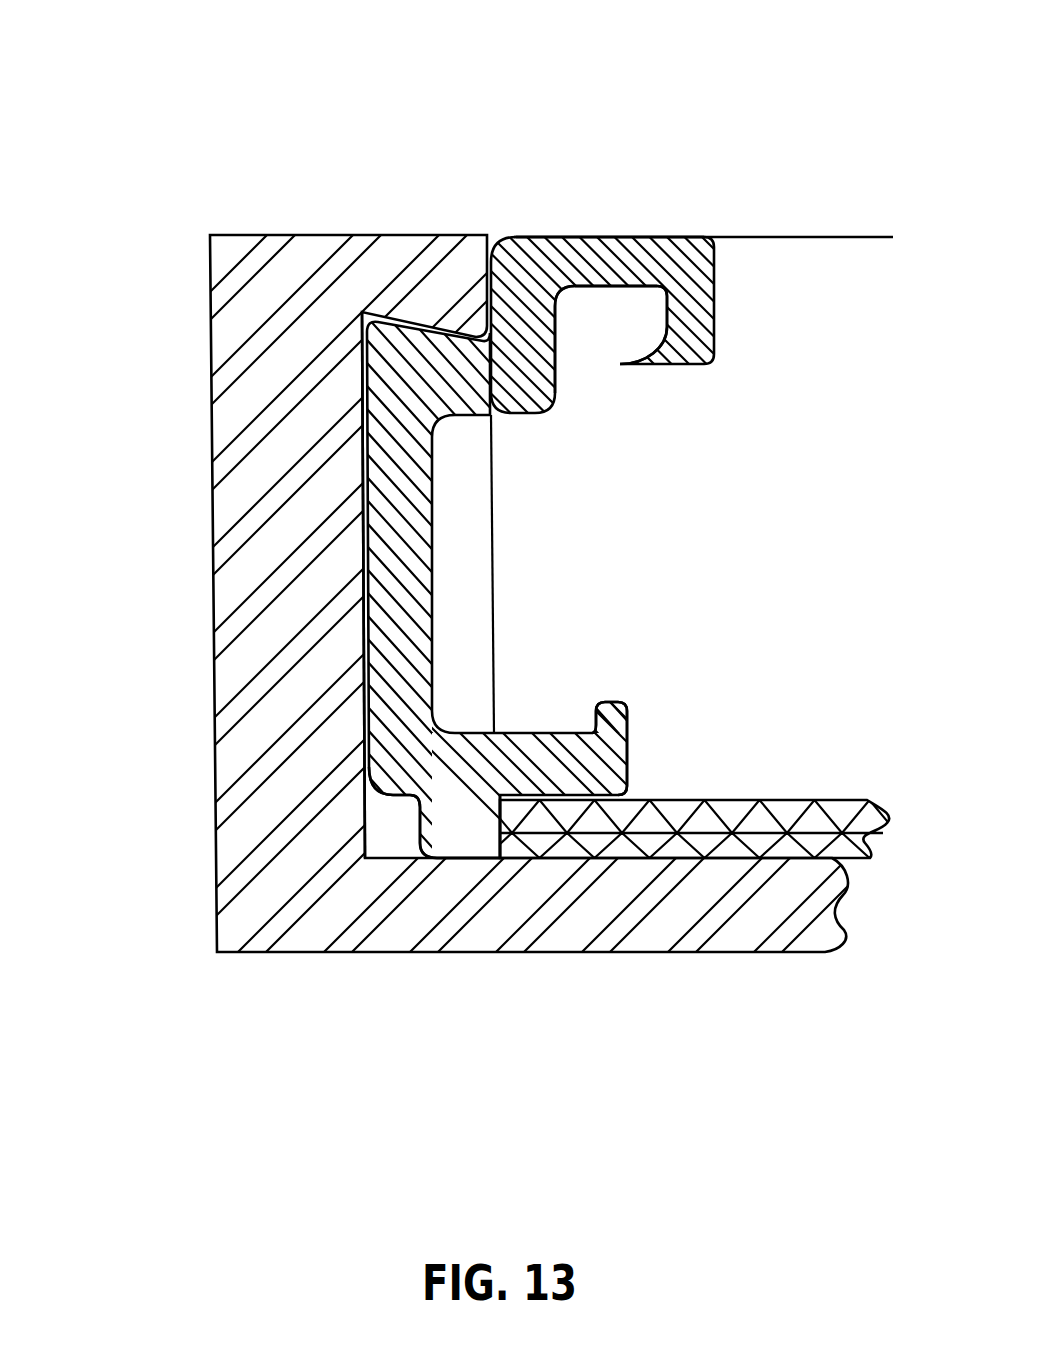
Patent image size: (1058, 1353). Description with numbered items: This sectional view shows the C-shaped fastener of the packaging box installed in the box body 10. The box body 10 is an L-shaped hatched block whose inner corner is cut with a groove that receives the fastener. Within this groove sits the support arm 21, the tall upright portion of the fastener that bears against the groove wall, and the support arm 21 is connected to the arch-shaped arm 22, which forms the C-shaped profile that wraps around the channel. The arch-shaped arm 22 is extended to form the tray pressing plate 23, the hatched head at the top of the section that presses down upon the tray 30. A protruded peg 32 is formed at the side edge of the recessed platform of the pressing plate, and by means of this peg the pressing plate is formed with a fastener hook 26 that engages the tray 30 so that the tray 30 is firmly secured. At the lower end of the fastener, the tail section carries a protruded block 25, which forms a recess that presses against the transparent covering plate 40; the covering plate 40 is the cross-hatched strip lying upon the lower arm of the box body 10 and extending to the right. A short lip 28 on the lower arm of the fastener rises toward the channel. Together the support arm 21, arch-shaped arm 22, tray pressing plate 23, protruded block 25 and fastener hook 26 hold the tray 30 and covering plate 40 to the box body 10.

The box body 10 is at (275, 385).
The support arm 21 is at (383, 548).
The arch-shaped arm 22 is at (420, 348).
The tray pressing plate 23 is at (612, 258).
The protruded block 25 is at (445, 838).
The fastener hook 26 is at (667, 340).
The lip 28 is at (605, 708).
The tray 30 is at (750, 280).
The protruded peg 32 is at (590, 317).
The transparent covering plate 40 is at (678, 848).